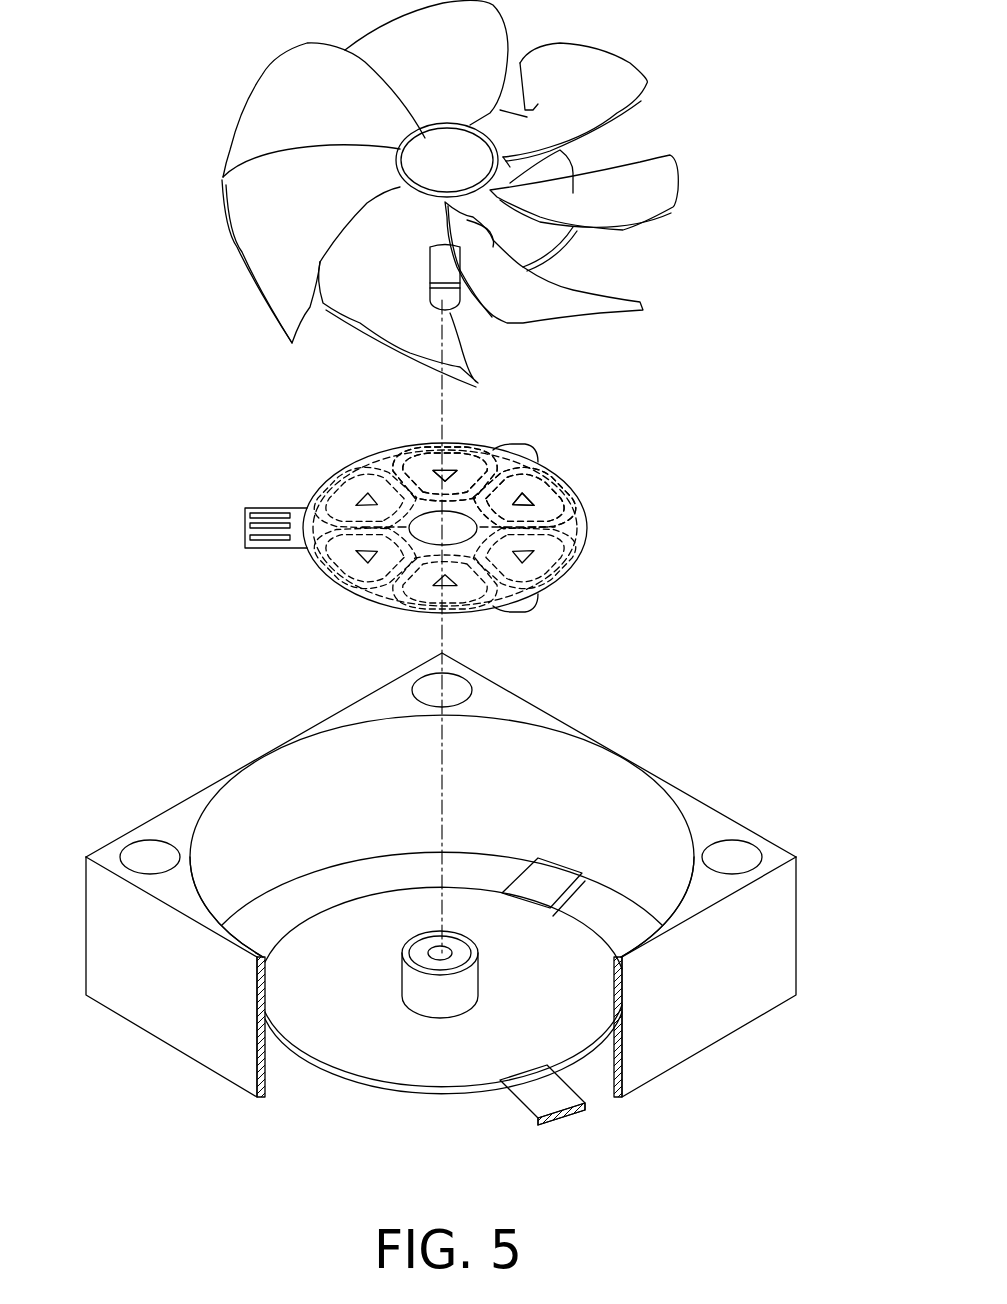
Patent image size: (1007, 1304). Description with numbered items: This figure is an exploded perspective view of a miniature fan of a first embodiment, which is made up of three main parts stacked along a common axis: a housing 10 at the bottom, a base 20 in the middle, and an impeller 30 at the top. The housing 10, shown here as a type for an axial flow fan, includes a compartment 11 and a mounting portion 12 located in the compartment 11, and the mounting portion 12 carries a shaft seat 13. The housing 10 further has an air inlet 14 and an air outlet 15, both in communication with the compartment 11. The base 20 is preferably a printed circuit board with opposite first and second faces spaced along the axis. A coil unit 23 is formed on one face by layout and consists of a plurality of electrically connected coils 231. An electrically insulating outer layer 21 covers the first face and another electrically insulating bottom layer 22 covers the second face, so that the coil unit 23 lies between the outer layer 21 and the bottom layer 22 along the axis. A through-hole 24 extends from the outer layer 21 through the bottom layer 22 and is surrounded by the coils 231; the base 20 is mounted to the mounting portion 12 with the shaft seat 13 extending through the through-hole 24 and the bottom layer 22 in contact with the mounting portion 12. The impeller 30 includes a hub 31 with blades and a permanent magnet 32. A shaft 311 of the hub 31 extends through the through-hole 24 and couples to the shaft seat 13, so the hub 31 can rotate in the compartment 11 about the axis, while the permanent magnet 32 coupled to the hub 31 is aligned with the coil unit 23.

The housing 10 is at (441, 909).
The compartment 11 is at (518, 797).
The mounting portion 12 is at (420, 1078).
The shaft seat 13 is at (425, 1002).
The air inlet 14 is at (310, 737).
The air outlet 15 is at (305, 870).
The base 20 is at (498, 500).
The electrically insulating outer layer 21 is at (580, 528).
The bottom layer 22 is at (577, 564).
The coil unit 23 is at (547, 479).
The coil 231 is at (477, 457).
The through-hole 24 is at (405, 522).
The impeller 30 is at (488, 193).
The hub 31 is at (420, 155).
The shaft 311 is at (470, 318).
The permanent magnet 32 is at (555, 252).